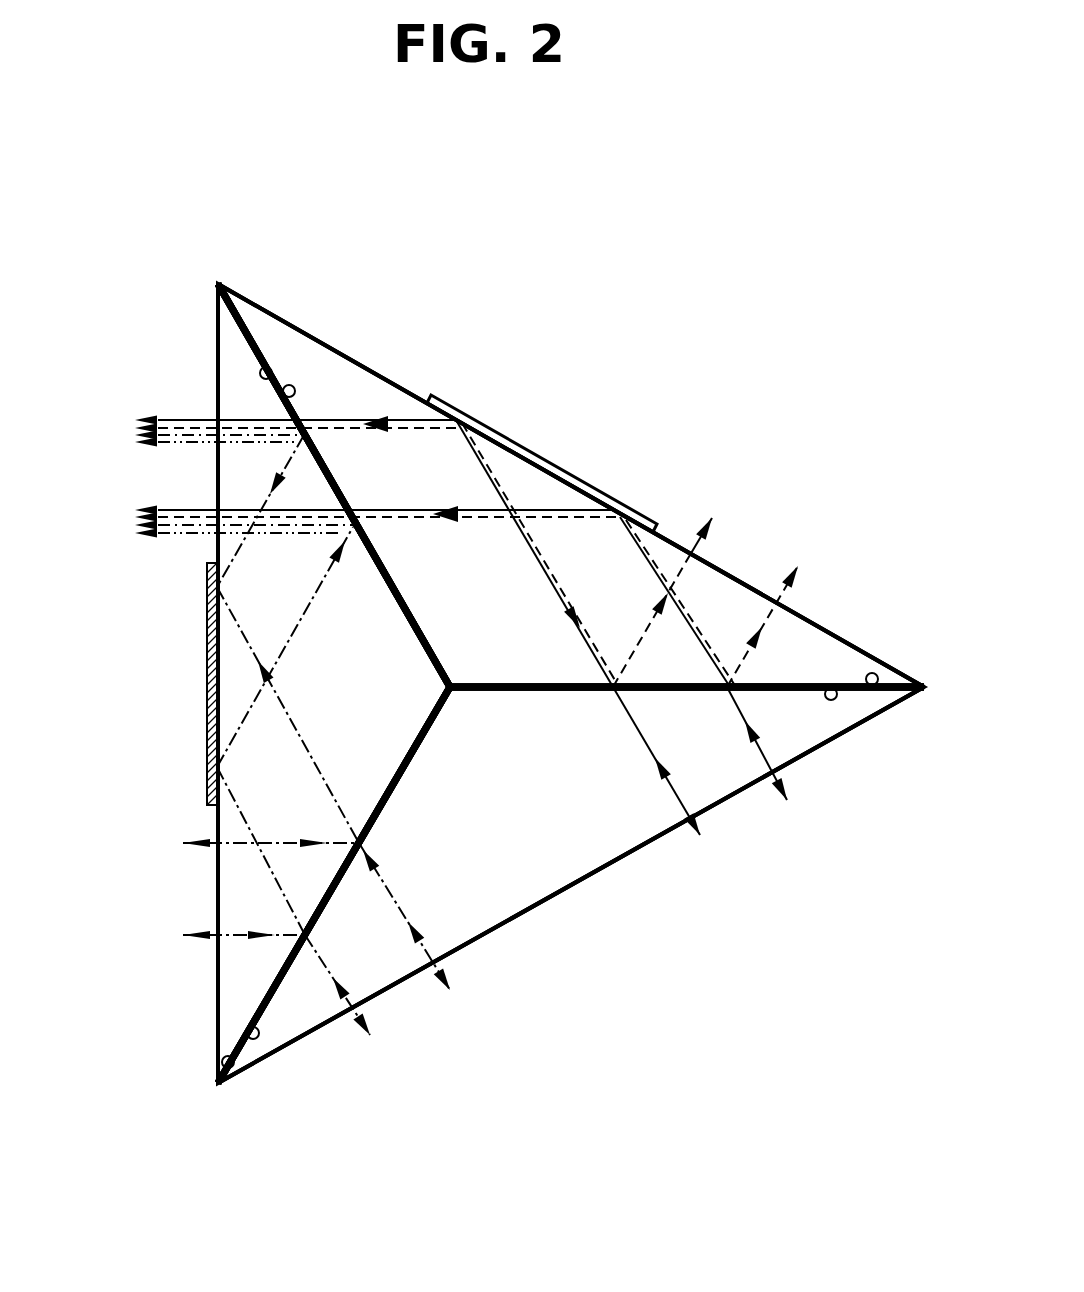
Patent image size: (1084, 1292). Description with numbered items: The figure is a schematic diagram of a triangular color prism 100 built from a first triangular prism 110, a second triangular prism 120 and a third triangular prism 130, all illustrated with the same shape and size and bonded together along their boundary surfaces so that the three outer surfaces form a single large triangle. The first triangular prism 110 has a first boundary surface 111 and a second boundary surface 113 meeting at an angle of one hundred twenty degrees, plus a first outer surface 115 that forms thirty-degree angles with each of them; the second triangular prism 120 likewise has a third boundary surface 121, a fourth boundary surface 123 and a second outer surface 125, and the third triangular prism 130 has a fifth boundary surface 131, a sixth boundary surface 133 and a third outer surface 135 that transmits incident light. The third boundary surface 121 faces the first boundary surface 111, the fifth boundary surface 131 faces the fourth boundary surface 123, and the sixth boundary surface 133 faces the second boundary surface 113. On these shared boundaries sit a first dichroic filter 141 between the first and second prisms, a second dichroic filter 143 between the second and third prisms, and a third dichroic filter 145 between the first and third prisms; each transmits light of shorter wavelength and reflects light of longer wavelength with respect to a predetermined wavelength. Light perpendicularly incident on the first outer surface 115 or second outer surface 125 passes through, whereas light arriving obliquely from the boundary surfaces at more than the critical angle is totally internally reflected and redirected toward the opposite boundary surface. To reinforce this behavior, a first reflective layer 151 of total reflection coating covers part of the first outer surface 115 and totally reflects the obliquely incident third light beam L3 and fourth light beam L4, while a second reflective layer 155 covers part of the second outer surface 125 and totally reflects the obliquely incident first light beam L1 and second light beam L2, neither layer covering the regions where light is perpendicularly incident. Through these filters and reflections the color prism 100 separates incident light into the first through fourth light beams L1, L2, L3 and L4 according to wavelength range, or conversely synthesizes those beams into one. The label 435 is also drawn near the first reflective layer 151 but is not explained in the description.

The color prism 100 is at (180, 318).
The first triangular prism 110 is at (235, 693).
The first boundary surface 111 is at (285, 396).
The second boundary surface 113 is at (240, 1038).
The first outer surface 115 is at (215, 468).
The second triangular prism 120 is at (358, 387).
The third boundary surface 121 is at (268, 374).
The fourth boundary surface 123 is at (847, 683).
The second outer surface 125 is at (440, 400).
The third triangular prism 130 is at (571, 862).
The fifth boundary surface 131 is at (877, 688).
The sixth boundary surface 133 is at (228, 1080).
The third outer surface 135 is at (513, 918).
The first dichroic filter 141 is at (250, 338).
The second dichroic filter 143 is at (790, 684).
The third dichroic filter 145 is at (272, 1003).
The first reflective layer 151 is at (210, 730).
The second reflective layer 155 is at (567, 473).
The polarizing element 435 is at (205, 560).
The first light beam L1 is at (687, 583).
The second light beam L2 is at (668, 790).
The third light beam L3 is at (330, 963).
The fourth light beam L4 is at (215, 935).